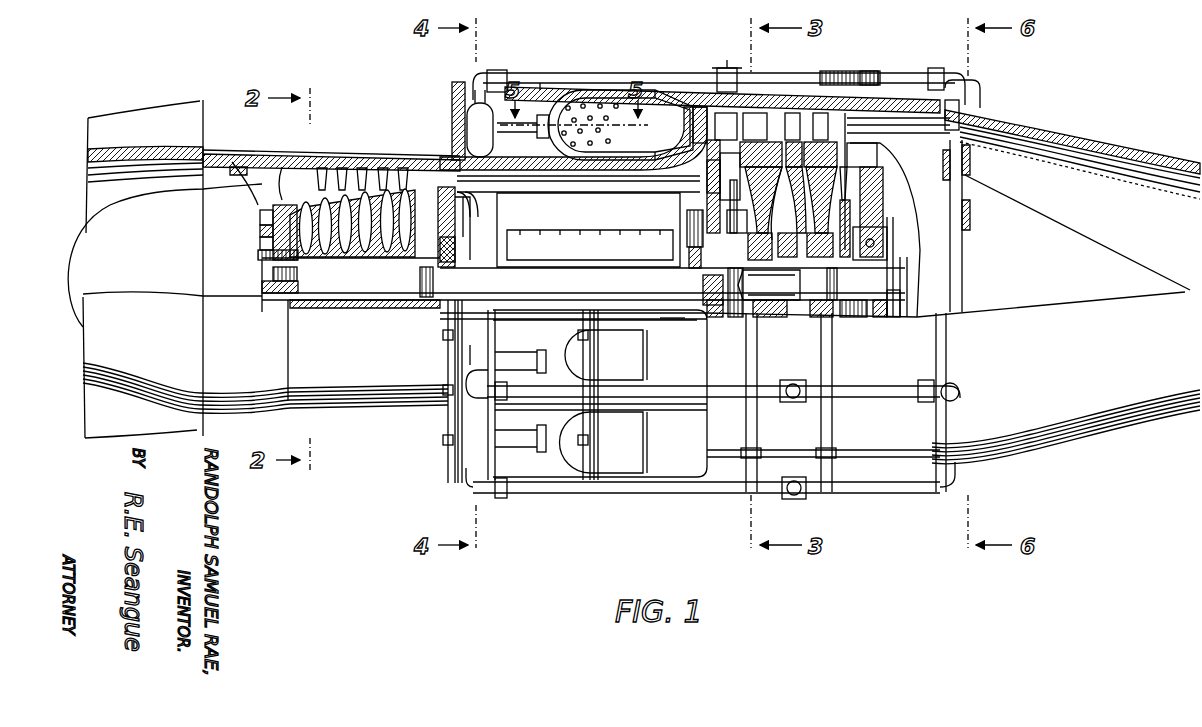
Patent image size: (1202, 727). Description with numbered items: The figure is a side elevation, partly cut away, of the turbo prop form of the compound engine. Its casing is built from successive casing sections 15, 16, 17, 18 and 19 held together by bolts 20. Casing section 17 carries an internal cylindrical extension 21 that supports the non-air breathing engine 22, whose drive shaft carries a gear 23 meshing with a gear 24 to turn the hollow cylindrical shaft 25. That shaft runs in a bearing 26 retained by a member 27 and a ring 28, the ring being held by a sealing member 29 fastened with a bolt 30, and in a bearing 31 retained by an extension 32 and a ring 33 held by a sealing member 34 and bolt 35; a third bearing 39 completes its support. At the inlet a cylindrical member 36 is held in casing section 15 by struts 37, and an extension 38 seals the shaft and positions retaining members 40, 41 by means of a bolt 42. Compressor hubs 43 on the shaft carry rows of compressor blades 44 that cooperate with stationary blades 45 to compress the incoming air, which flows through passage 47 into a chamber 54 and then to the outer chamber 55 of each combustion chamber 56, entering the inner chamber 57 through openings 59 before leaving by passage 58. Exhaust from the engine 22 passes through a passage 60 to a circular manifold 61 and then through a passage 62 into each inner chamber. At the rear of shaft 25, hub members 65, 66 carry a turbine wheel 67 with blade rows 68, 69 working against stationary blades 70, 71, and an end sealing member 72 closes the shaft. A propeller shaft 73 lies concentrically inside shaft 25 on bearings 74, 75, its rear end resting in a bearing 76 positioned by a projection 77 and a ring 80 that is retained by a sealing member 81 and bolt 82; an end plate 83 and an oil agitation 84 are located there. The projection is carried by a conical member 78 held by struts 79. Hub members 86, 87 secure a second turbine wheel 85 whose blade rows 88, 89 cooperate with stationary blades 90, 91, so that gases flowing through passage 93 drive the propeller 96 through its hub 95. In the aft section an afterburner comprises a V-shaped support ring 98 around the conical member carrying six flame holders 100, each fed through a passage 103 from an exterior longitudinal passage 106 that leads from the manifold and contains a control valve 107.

The casing section 15 is at (380, 152).
The casing section 16 is at (516, 130).
The casing section 17 is at (712, 74).
The casing section 18 is at (800, 494).
The casing section 19 is at (1027, 462).
The bolts 20 is at (448, 436).
The extension 21 is at (578, 195).
The non-air breathing engine 22 is at (588, 230).
The gear 23 is at (694, 210).
The gear 24 is at (685, 314).
The cylindrical shaft 25 is at (672, 280).
The bearing 26 is at (470, 270).
The member 27 is at (463, 236).
The ring 28 is at (455, 250).
The sealing member 29 is at (433, 275).
The bolt 30 is at (438, 224).
The bearing 31 is at (708, 308).
The extension 32 is at (734, 190).
The ring 33 is at (760, 246).
The sealing member 34 is at (737, 195).
The bolt 35 is at (740, 218).
The cylindrical member 36 is at (220, 203).
The struts 37 is at (246, 155).
The extension 38 is at (278, 204).
The bearing 39 is at (258, 256).
The retaining member 40 is at (260, 244).
The retaining member 41 is at (260, 213).
The bolt 42 is at (260, 231).
The compressor hubs 43 is at (318, 262).
The compressor blades 44 is at (320, 168).
The stationary blades 45 is at (342, 168).
The passage 47 is at (557, 180).
The chamber 54 is at (672, 94).
The outer chamber 55 is at (570, 90).
The combustion chamber 56 is at (552, 88).
The inner chamber 57 is at (615, 356).
The passage 58 is at (702, 105).
The openings 59 is at (598, 128).
The passage 60 is at (476, 202).
The manifold 61 is at (452, 98).
The passage 62 is at (541, 138).
The hub member 65 is at (772, 320).
The hub member 66 is at (736, 317).
The turbine wheel 67 is at (785, 203).
The blades 68 is at (776, 104).
The blades 69 is at (757, 112).
The stationary blades 70 is at (761, 187).
The stationary blades 71 is at (792, 112).
The end sealing member 72 is at (789, 233).
The shaft 73 is at (266, 312).
The bearing 74 is at (262, 286).
The bearing 75 is at (778, 317).
The bearing 76 is at (878, 318).
The projection 77 is at (872, 206).
The conical member 78 is at (1042, 222).
The struts 79 is at (900, 140).
The ring 80 is at (870, 243).
The sealing member 81 is at (846, 227).
The bolt 82 is at (820, 245).
The end plate 83 is at (895, 242).
The oil agitation 84 is at (894, 317).
The turbine wheel 85 is at (844, 183).
The hub member 86 is at (815, 318).
The hub member 87 is at (850, 317).
The blades 88 is at (832, 100).
The blades 89 is at (898, 125).
The stationary blades 90 is at (796, 187).
The stationary blades 91 is at (820, 187).
The passage 93 is at (934, 68).
The hub 95 is at (387, 309).
The propeller 96 is at (175, 150).
The support ring 98 is at (964, 242).
The flame holders 100 is at (975, 163).
The passage 103 is at (972, 112).
The longitudinal passage 106 is at (895, 71).
The valve 107 is at (732, 60).